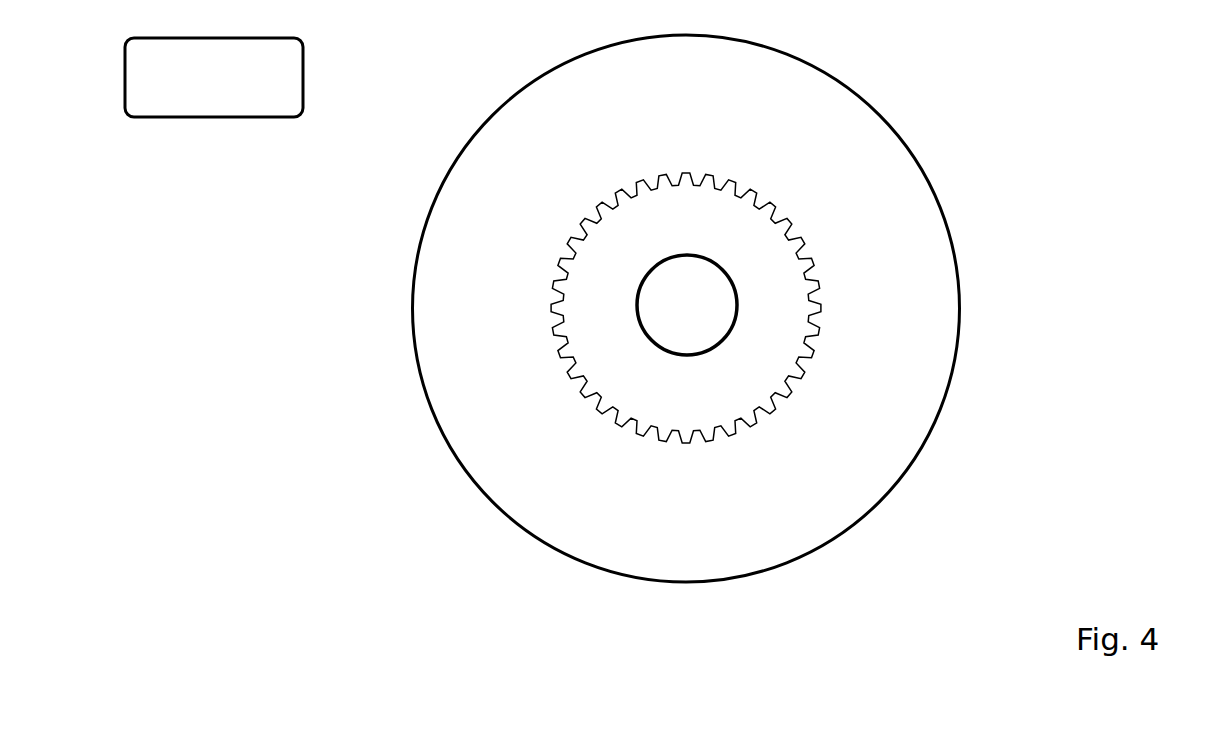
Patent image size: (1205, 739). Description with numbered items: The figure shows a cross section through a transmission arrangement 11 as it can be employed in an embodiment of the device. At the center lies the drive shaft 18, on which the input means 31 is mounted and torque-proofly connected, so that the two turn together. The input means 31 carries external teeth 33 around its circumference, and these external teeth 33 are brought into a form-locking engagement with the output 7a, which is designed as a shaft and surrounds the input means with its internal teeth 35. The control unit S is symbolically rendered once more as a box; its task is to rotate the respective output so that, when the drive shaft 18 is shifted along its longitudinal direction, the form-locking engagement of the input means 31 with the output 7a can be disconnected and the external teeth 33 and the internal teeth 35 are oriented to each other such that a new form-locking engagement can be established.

The control unit S is at (214, 77).
The output 7a is at (848, 95).
The transmission arrangement 11 is at (332, 527).
The drive shaft 18 is at (733, 278).
The input means 31 is at (800, 305).
The external teeth 33 is at (693, 445).
The internal teeth 35 is at (591, 214).